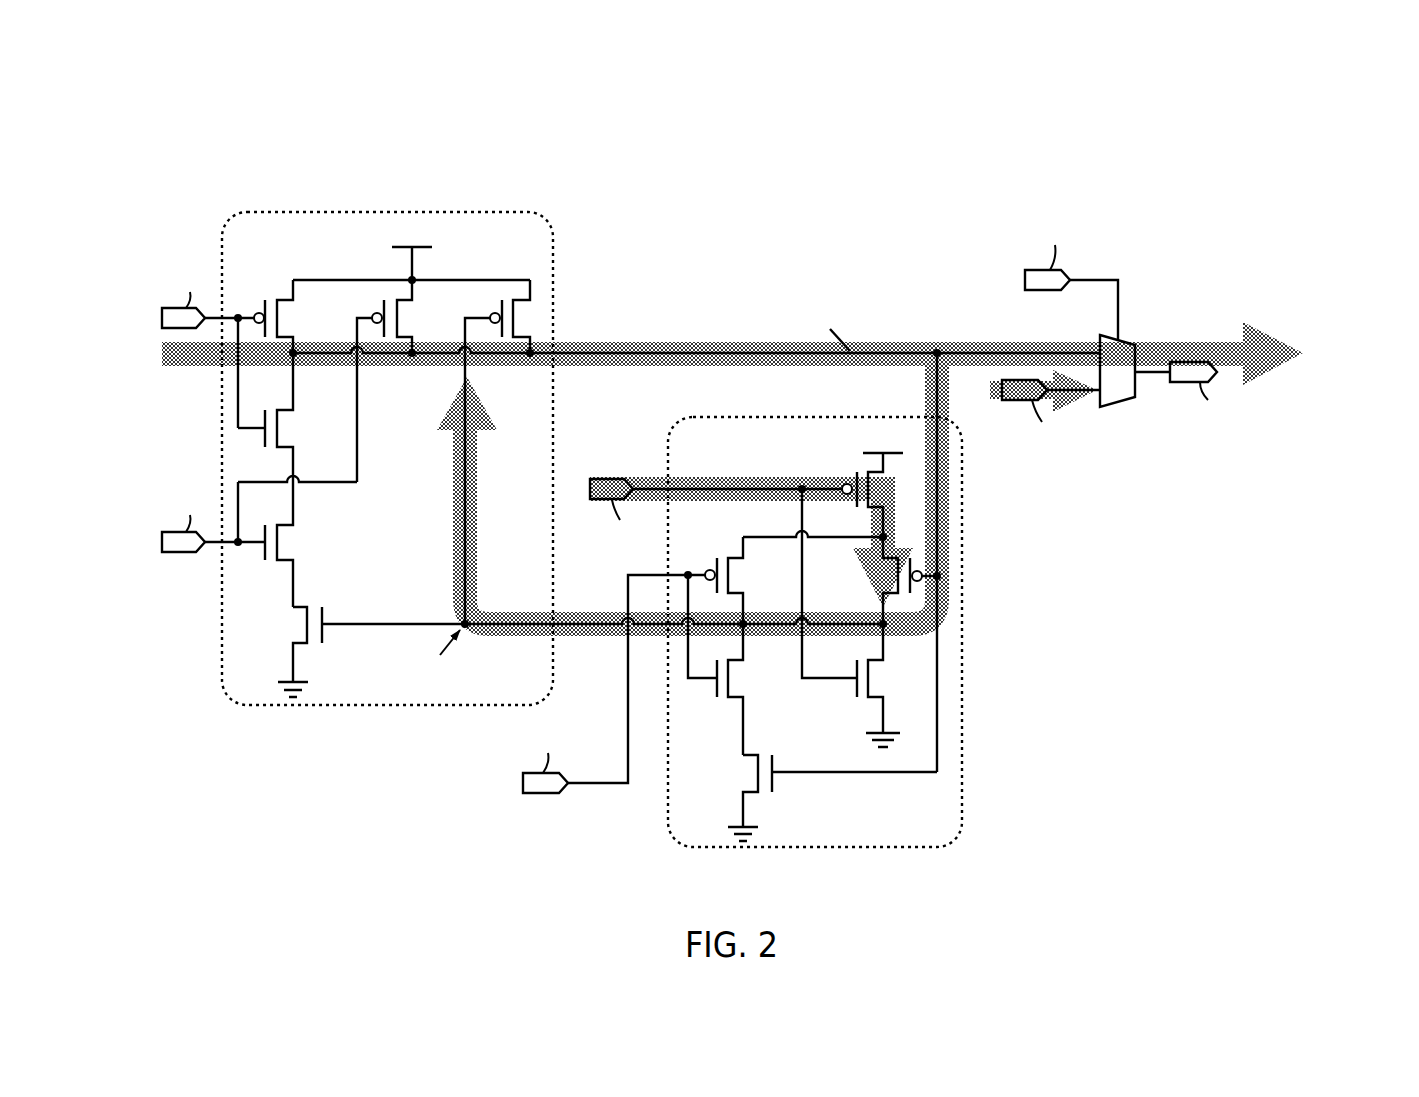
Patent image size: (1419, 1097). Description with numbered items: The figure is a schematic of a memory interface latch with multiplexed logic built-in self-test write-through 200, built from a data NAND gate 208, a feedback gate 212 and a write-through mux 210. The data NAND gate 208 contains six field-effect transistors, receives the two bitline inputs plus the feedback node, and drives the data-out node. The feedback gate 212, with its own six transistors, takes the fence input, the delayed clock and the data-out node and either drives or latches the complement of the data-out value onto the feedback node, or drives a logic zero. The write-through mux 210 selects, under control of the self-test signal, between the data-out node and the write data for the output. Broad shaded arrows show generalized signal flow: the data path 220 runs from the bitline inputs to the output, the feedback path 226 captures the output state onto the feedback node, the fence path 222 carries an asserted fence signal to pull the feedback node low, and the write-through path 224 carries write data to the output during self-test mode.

The memory interface latch with multiplexed LBIST write-through 200 is at (124, 162).
The data NAND gate 208 is at (265, 718).
The write-through mux 210 is at (1138, 343).
The feedback gate 212 is at (718, 855).
The data path 220 is at (162, 355).
The fence path 222 is at (651, 473).
The write-through path 224 is at (997, 400).
The feedback path 226 is at (945, 618).